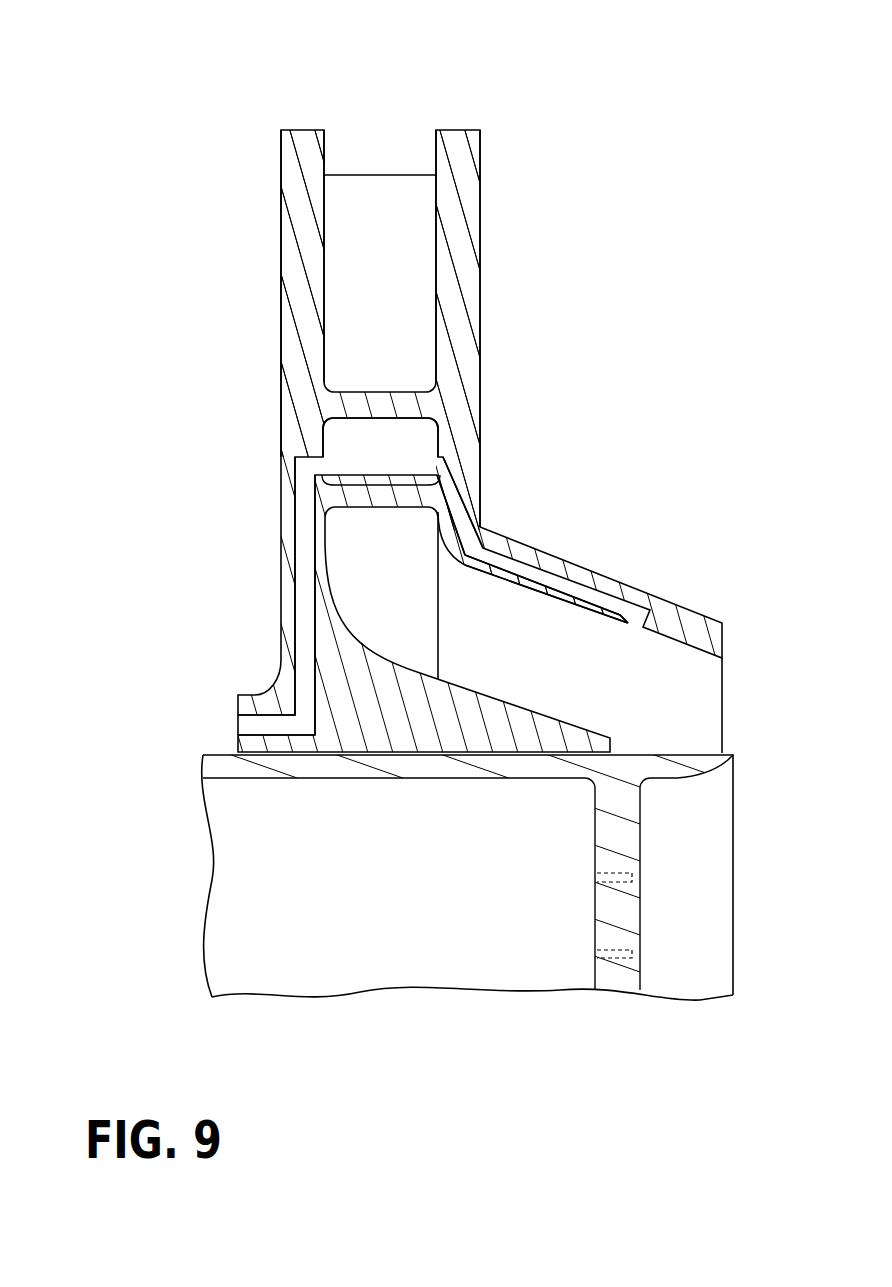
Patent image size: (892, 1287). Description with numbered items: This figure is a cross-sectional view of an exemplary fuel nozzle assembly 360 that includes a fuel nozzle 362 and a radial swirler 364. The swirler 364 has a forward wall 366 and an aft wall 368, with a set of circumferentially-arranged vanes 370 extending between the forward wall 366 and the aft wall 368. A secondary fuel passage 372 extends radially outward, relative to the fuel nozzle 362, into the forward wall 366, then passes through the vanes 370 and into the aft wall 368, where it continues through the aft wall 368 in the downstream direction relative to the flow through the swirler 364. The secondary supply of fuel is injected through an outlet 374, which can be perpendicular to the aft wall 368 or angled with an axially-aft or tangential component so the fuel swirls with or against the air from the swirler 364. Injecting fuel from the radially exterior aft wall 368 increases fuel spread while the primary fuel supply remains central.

The fuel nozzle assembly 360 is at (466, 510).
The fuel nozzle 362 is at (247, 928).
The swirler 364 is at (300, 163).
The forward wall 366 is at (297, 270).
The aft wall 368 is at (459, 305).
The vanes 370 is at (393, 437).
The secondary fuel passage 372 is at (463, 521).
The outlet 374 is at (633, 628).